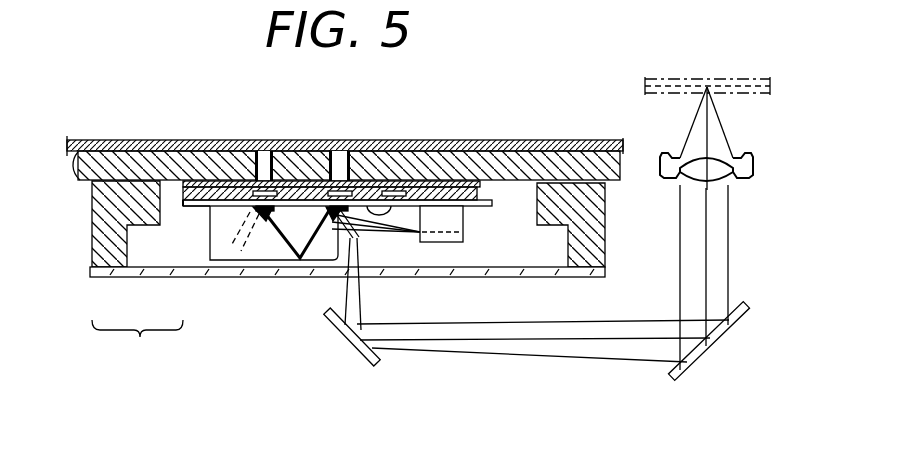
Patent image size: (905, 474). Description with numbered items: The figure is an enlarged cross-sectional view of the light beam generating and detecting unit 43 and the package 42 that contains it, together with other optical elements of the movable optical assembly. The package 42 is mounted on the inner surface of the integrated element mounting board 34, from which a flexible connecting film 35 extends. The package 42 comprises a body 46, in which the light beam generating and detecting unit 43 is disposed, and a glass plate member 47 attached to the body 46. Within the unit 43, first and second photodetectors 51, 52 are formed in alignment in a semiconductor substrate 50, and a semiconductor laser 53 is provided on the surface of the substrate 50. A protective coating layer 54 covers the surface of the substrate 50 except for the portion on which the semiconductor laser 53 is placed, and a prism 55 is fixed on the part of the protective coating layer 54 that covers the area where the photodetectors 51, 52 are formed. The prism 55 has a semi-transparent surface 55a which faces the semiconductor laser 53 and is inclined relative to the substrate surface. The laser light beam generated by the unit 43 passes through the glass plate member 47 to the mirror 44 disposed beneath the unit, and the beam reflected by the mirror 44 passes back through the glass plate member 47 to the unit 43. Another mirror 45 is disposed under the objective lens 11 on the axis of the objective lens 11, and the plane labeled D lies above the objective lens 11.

The integrated element mounting board 34 is at (107, 162).
The flexible connecting film 35 is at (146, 150).
The second photodetector 52 is at (236, 178).
The first photodetector 51 is at (368, 182).
The semi-transparent surface 55a is at (417, 188).
The semiconductor substrate 50 is at (490, 180).
The protective coating layer 54 is at (198, 206).
The prism 55 is at (268, 250).
The semiconductor laser 53 is at (447, 243).
The light beam generating and detecting unit 43 is at (476, 213).
The body 46 is at (113, 268).
The glass plate member 47 is at (170, 268).
The package 42 is at (137, 344).
The mirror 44 is at (352, 349).
The mirror 45 is at (670, 370).
The objective lens 11 is at (692, 160).
The document plane D is at (697, 76).